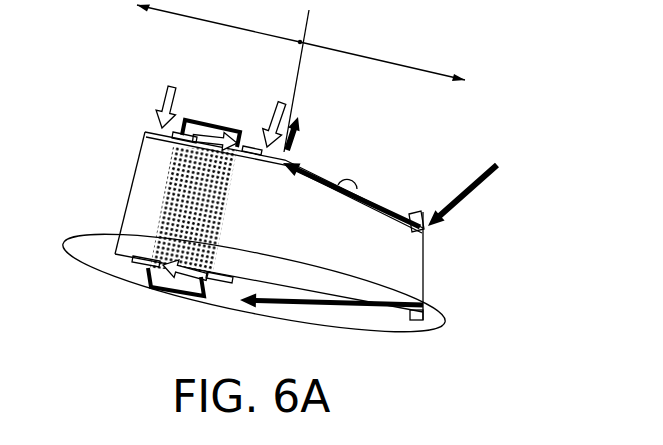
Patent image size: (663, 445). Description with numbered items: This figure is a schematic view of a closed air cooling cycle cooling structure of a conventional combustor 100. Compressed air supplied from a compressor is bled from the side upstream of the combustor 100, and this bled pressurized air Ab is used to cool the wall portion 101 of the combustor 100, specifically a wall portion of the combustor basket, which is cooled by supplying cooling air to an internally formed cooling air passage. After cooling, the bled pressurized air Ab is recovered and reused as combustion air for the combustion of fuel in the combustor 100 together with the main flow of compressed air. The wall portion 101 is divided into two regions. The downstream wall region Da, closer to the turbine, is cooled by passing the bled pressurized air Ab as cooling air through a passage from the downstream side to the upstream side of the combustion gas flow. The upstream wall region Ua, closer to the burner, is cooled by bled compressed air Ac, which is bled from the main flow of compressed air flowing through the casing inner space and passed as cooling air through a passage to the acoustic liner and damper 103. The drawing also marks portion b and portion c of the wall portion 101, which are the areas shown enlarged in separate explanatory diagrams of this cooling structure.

The combustor 100 is at (338, 142).
The wall portion 101 is at (319, 146).
The acoustic liner and damper 103 is at (201, 118).
The upstream wall region Ua is at (218, 22).
The downstream wall region Da is at (381, 60).
The bled compressed air Ac is at (266, 140).
The bled pressurized air Ab is at (472, 197).
The portion b is at (352, 184).
The portion c is at (428, 307).